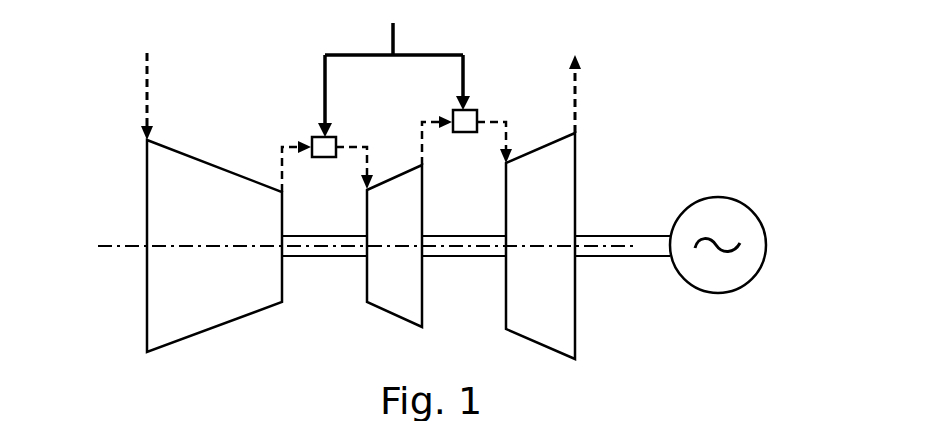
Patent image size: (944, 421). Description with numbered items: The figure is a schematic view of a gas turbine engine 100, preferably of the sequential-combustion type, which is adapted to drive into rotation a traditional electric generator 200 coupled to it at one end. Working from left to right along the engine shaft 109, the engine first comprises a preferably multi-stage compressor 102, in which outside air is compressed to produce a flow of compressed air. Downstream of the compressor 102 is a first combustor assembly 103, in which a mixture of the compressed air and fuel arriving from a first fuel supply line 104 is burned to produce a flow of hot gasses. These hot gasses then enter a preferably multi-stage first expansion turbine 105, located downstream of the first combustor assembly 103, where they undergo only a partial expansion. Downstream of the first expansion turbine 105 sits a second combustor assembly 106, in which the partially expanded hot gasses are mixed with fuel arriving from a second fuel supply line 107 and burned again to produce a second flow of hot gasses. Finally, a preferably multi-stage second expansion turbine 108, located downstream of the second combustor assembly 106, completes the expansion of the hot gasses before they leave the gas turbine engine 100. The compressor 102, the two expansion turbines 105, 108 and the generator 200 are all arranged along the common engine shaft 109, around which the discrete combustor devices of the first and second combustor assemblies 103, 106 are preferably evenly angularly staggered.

The gas turbine engine 100 is at (637, 115).
The compressor 102 is at (187, 224).
The first combustor assembly 103 is at (324, 157).
The first fuel supply line 104 is at (323, 66).
The first expansion turbine 105 is at (373, 224).
The second combustor assembly 106 is at (465, 132).
The second fuel supply line 107 is at (465, 72).
The second expansion turbine 108 is at (518, 224).
The engine shaft 109 is at (457, 248).
The electric generator 200 is at (728, 215).